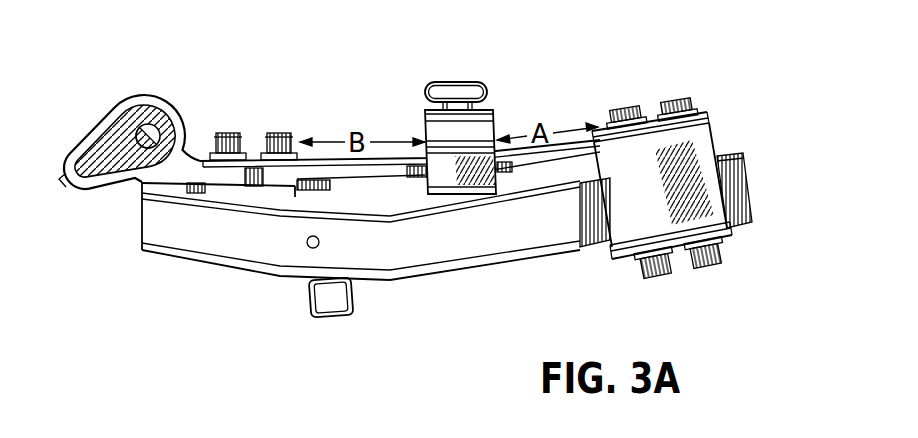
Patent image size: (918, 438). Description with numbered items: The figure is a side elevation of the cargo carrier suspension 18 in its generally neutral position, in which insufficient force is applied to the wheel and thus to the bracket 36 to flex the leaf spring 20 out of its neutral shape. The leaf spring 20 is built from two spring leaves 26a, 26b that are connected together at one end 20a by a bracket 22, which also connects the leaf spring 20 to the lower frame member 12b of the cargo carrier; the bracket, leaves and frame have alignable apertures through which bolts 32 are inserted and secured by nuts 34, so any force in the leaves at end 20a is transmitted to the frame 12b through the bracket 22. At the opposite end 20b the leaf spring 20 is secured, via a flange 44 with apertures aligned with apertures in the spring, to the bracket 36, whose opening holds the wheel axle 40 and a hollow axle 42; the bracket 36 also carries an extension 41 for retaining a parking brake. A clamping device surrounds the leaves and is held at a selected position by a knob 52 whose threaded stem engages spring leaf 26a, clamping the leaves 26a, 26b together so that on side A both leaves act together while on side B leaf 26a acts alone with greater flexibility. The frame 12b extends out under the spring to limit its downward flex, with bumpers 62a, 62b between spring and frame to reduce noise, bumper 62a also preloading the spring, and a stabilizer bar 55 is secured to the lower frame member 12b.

The frame 12b is at (240, 253).
The suspension 18 is at (458, 172).
The leaf spring 20 is at (409, 178).
The end 20a is at (580, 180).
The end 20b is at (257, 160).
The bracket 22 is at (685, 143).
The spring leaf 26a is at (390, 167).
The spring leaf 26b is at (377, 182).
The bolts 32 is at (623, 108).
The nuts 34 is at (657, 275).
The bracket 36 is at (187, 133).
The wheel axle 40 is at (146, 133).
The extension 41 is at (62, 180).
The hollow axle 42 is at (92, 163).
The flange 44 is at (217, 175).
The knob 52 is at (472, 92).
The stabilizer bar 55 is at (327, 318).
The bumper 62a is at (300, 192).
The bumper 62b is at (172, 187).